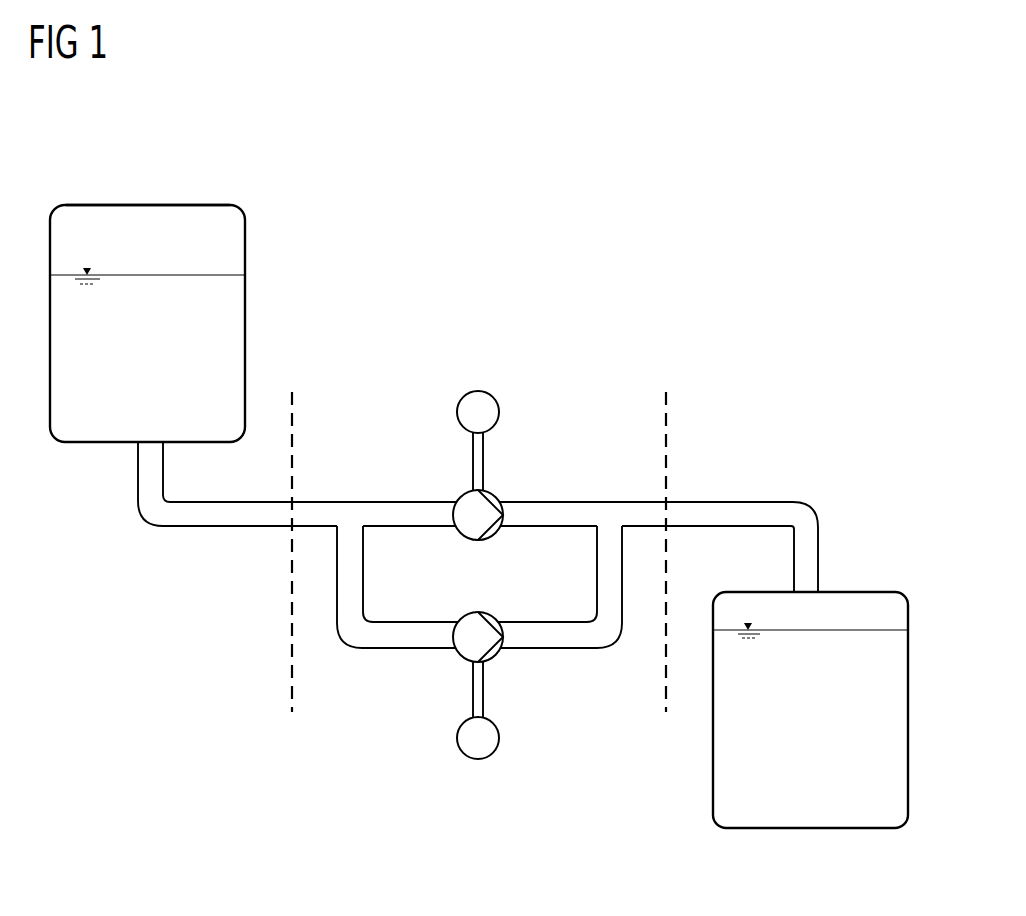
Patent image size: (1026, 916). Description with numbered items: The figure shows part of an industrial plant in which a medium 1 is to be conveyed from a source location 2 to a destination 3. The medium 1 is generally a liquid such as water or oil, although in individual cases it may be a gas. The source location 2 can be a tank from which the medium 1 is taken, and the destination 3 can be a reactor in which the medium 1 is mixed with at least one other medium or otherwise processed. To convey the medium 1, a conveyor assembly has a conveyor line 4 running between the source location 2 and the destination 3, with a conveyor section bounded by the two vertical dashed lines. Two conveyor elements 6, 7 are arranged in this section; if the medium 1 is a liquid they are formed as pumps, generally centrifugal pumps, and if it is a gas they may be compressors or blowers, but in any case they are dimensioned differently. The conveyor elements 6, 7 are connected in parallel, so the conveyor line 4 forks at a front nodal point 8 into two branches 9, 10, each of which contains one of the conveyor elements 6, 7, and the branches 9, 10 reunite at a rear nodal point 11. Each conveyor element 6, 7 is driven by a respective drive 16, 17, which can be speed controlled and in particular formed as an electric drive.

The medium 1 is at (235, 291).
The source location 2 is at (172, 204).
The destination 3 is at (870, 592).
The conveyor line 4 is at (195, 528).
The conveyor element 6 is at (497, 495).
The conveyor element 7 is at (492, 662).
The front nodal point 8 is at (355, 497).
The branch 9 is at (411, 497).
The branch 10 is at (380, 642).
The rear nodal point 11 is at (607, 497).
The drive 16 is at (478, 391).
The drive 17 is at (478, 760).